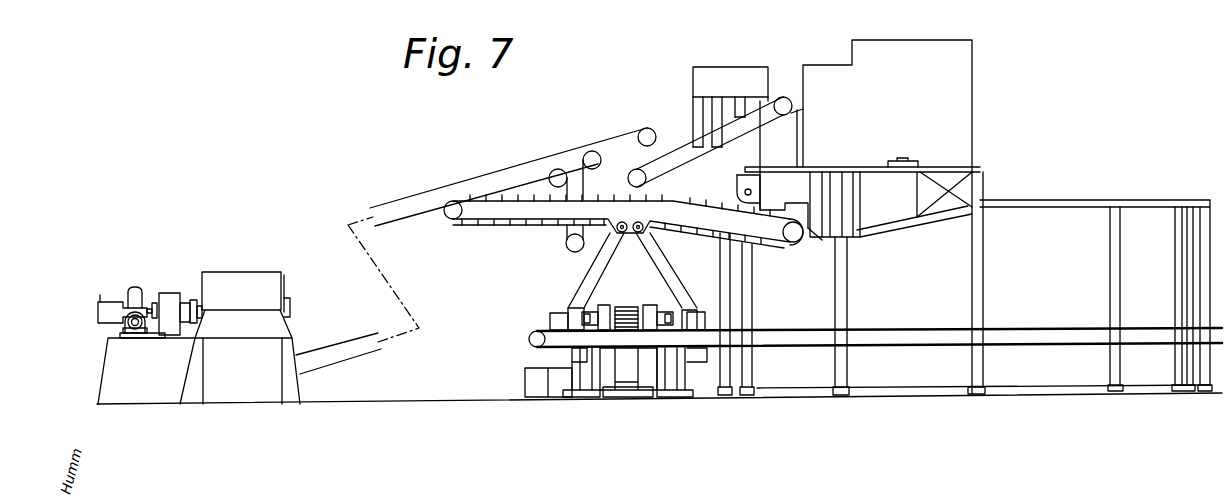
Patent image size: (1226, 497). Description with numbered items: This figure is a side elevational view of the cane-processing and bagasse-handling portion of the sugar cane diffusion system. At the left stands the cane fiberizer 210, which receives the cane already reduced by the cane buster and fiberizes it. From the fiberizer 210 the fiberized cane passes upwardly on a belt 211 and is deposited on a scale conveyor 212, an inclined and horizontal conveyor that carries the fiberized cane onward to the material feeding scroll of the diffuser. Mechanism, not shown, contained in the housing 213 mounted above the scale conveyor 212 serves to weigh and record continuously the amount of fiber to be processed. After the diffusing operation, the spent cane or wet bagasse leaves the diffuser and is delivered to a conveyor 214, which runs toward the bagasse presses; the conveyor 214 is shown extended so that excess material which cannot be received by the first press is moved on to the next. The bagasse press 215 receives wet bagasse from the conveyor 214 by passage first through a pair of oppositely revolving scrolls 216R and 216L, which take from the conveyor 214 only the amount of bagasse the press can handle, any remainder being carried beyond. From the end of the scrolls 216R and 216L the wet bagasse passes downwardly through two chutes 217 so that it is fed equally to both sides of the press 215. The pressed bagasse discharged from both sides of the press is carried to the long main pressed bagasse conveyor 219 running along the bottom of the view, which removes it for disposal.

The cane fiberizer 210 is at (236, 283).
The belt 211 is at (455, 191).
The scale conveyor 212 is at (678, 148).
The housing 213 is at (740, 76).
The conveyor 214 is at (770, 244).
The bagasse press 215 is at (625, 398).
The left scroll 216L is at (612, 232).
The right scroll 216R is at (645, 230).
The chutes 217 is at (580, 292).
The main pressed bagasse conveyor 219 is at (1042, 327).